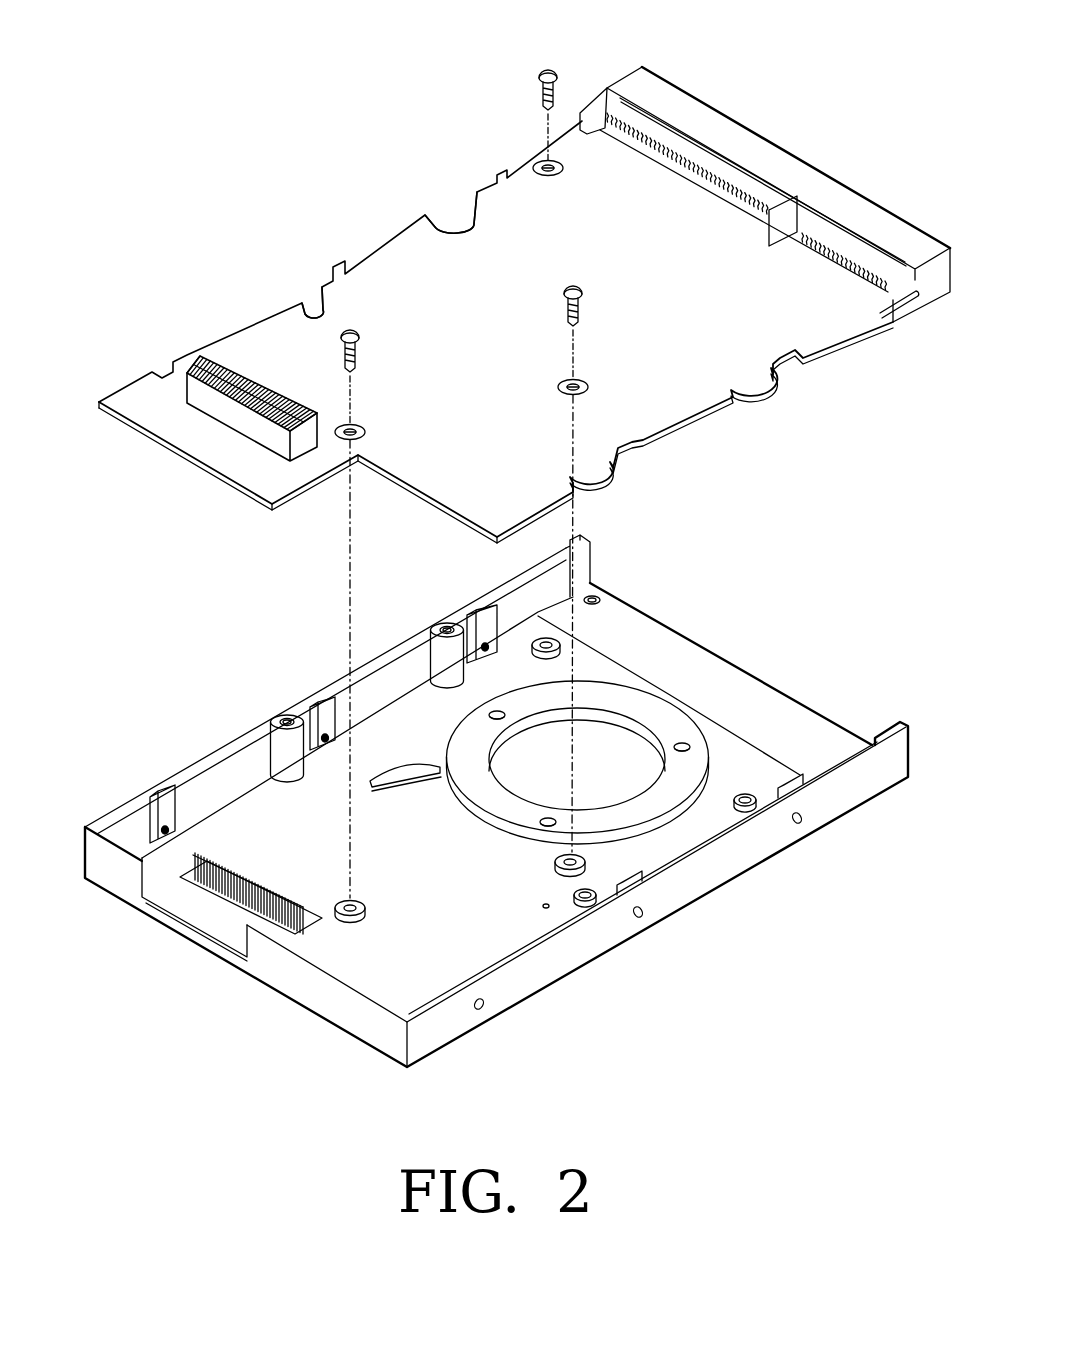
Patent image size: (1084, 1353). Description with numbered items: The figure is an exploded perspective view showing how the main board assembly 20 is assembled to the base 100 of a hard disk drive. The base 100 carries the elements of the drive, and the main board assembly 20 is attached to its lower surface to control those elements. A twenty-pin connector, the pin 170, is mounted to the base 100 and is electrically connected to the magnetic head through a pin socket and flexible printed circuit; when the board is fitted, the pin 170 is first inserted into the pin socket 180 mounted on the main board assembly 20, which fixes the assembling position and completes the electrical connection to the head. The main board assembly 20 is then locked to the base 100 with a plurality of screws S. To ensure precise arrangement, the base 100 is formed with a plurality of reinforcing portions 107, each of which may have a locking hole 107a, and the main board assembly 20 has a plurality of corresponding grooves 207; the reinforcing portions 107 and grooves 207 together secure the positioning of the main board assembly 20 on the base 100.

The main board assembly 20 is at (453, 122).
The grooves 207 is at (483, 182).
The pin socket 180 is at (207, 358).
The screws S is at (551, 72).
The base 100 is at (774, 870).
The reinforcing portions 107 is at (331, 721).
The locking hole 107a is at (284, 717).
The pin 170 is at (223, 896).